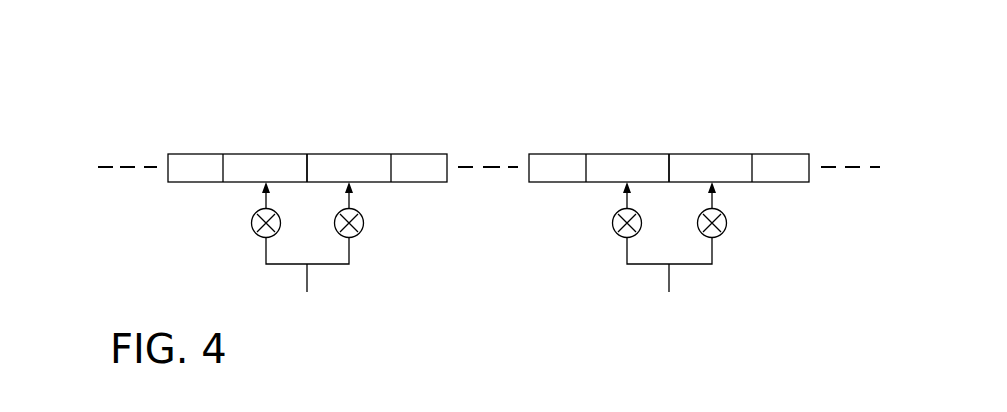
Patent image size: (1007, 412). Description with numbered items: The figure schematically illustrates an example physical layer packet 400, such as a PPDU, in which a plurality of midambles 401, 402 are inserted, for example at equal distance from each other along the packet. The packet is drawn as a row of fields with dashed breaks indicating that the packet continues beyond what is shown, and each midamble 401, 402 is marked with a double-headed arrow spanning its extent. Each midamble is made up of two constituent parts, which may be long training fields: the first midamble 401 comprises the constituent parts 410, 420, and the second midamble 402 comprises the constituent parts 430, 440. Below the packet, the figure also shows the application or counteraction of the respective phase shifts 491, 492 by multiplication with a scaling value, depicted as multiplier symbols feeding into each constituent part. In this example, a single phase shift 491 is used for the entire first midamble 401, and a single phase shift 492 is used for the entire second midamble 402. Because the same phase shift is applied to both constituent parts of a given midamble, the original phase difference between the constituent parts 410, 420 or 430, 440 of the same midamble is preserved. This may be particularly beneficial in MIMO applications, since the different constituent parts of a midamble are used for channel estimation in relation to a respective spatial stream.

The physical layer packet 400 is at (911, 131).
The midamble 401 is at (222, 125).
The midamble 402 is at (585, 125).
The constituent part 410 is at (265, 168).
The constituent part 420 is at (349, 168).
The constituent part 430 is at (627, 168).
The constituent part 440 is at (710, 168).
The phase shift 491 is at (308, 249).
The phase shift 492 is at (670, 249).